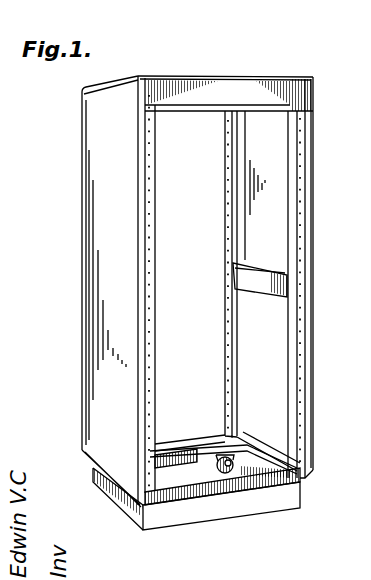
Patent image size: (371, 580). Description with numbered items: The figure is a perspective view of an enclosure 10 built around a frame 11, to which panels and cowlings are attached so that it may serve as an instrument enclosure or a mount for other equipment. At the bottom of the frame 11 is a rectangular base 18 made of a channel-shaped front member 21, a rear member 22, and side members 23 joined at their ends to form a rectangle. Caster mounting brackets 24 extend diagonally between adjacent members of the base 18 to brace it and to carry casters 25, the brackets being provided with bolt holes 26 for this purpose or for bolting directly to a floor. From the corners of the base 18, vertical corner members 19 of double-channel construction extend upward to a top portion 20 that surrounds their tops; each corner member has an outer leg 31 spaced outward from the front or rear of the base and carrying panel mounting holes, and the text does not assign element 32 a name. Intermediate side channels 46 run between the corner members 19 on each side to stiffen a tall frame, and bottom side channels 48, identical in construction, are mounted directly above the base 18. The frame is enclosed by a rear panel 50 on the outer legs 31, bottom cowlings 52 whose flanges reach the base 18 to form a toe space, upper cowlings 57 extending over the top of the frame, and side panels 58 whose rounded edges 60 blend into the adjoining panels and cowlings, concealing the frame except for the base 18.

The enclosure 10 is at (66, 180).
The frame 11 is at (216, 273).
The rectangular base 18 is at (310, 492).
The vertical corner members 19 is at (236, 346).
The top portion 20 is at (207, 112).
The front member 21 is at (247, 507).
The rear member 22 is at (162, 445).
The side members 23 is at (112, 497).
The caster mounting brackets 24 is at (220, 455).
The casters 25 is at (228, 474).
The bolt holes 26 is at (214, 450).
The outer leg 31 is at (155, 333).
The front vertical post 32 is at (153, 294).
The intermediate side channels 46 is at (273, 287).
The bottom side channels 48 is at (262, 455).
The rear panel 50 is at (223, 197).
The bottom cowlings 52 is at (304, 478).
The upper cowlings 57 is at (274, 82).
The side panels 58 is at (92, 258).
The rounded edges 60 is at (141, 77).